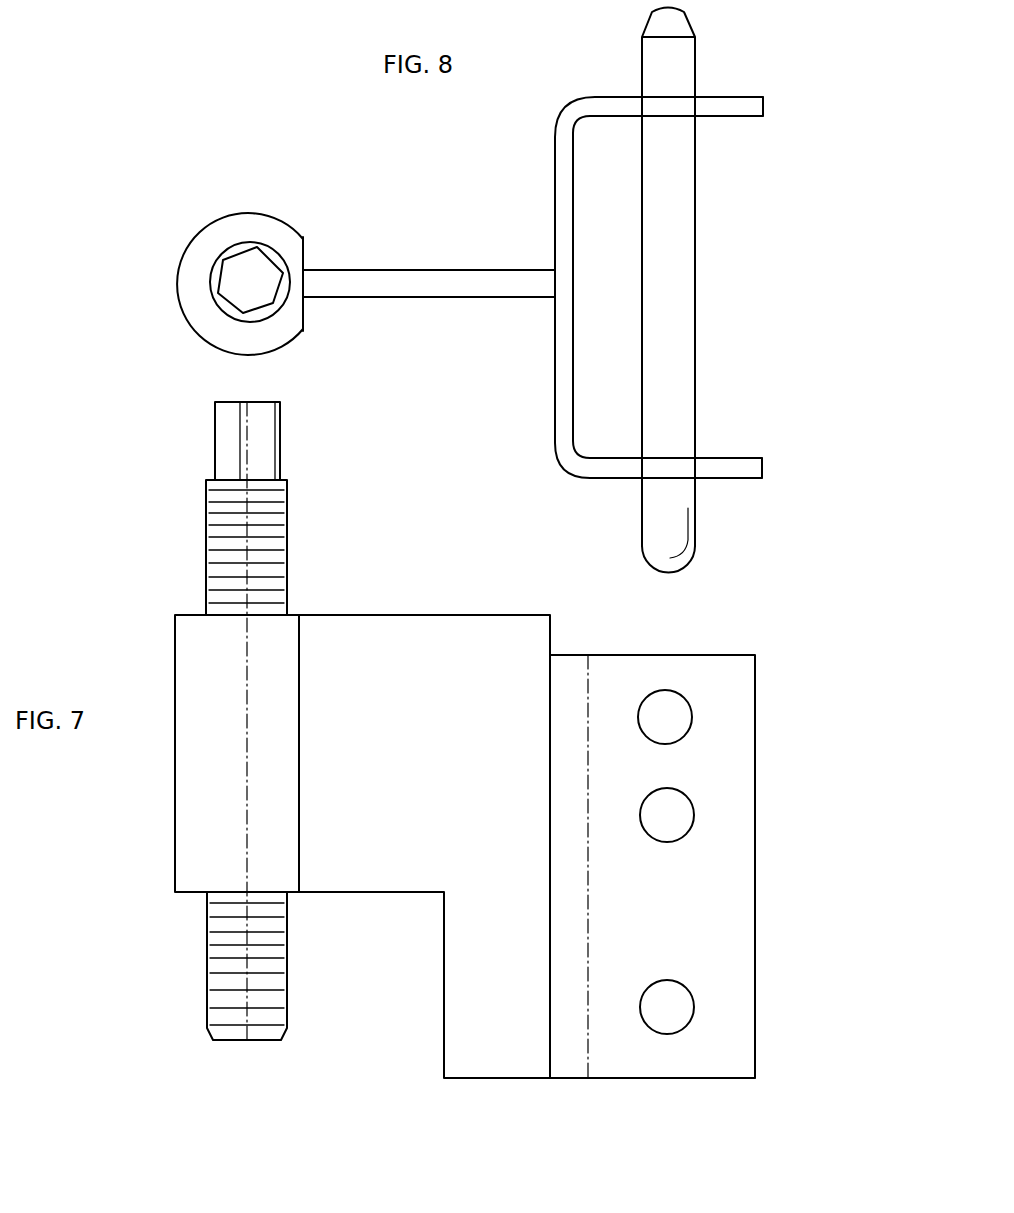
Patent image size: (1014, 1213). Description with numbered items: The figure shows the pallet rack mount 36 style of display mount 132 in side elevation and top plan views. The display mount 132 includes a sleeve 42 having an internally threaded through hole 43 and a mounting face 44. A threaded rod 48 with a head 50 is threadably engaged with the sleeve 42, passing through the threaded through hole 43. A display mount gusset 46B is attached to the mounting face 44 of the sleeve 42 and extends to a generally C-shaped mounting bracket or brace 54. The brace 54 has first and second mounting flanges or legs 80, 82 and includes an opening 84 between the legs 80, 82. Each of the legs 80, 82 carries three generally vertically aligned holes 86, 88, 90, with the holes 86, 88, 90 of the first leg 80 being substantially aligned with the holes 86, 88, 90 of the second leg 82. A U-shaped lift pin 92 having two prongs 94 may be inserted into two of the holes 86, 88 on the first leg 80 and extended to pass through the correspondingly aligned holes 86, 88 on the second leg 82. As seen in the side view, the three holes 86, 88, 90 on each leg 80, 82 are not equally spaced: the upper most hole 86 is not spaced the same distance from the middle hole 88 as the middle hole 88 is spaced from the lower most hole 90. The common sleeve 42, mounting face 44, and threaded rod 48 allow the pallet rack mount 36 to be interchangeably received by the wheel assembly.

In FIG. 8, the display mount 132 is at (346, 76).
In FIG. 8, the pallet rack mount 36 is at (567, 92).
In FIG. 7, the pallet rack mount 36 is at (697, 1086).
In FIG. 8, the sleeve 42 is at (257, 222).
In FIG. 8, the internally threaded through hole 43 is at (222, 262).
In FIG. 8, the mounting face 44 is at (305, 252).
In FIG. 7, the mounting face 44 is at (300, 643).
In FIG. 8, the display mount gusset 46B is at (397, 278).
In FIG. 7, the display mount gusset 46B is at (435, 630).
In FIG. 7, the threaded rod 48 is at (277, 500).
In FIG. 8, the head 50 is at (240, 268).
In FIG. 7, the head 50 is at (227, 430).
In FIG. 8, the mounting bracket 54 is at (749, 484).
In FIG. 7, the mounting bracket 54 is at (703, 648).
In FIG. 8, the first leg 80 is at (725, 462).
In FIG. 7, the first leg 80 is at (628, 1060).
In FIG. 8, the second leg 82 is at (733, 107).
In FIG. 8, the opening 84 is at (740, 265).
In FIG. 7, the upper most hole 86 is at (673, 733).
In FIG. 7, the middle hole 88 is at (673, 833).
In FIG. 7, the lower most hole 90 is at (670, 992).
In FIG. 8, the U-shaped lift pin 92 is at (634, 506).
In FIG. 8, the prongs 94 is at (687, 293).